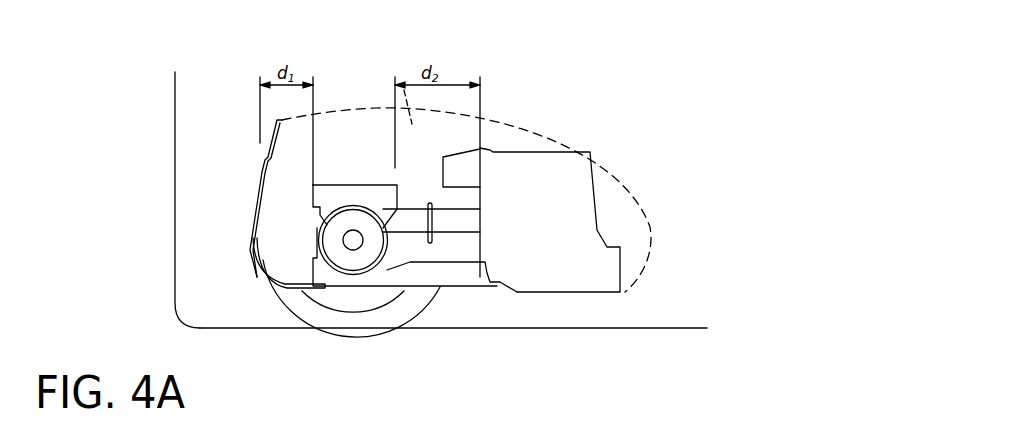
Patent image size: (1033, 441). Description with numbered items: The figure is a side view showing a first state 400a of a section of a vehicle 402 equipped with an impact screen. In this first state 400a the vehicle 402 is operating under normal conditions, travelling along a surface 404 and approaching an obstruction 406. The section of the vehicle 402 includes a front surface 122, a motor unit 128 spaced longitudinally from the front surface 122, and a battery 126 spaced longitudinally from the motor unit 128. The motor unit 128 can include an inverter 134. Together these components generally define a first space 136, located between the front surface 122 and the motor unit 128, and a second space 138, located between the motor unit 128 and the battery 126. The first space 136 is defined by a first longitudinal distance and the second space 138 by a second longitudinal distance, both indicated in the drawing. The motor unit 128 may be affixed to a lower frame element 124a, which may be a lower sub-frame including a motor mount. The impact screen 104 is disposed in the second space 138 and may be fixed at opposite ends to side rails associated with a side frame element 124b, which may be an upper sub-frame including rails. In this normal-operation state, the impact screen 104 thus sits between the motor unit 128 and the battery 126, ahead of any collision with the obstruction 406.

The first state 400a is at (705, 50).
The vehicle 402 is at (632, 153).
The surface 404 is at (657, 328).
The obstruction 406 is at (173, 88).
The inverter 134 is at (315, 205).
The front surface 122 is at (258, 236).
The first space 136 is at (287, 232).
The motor unit 128 is at (337, 228).
The second space 138 is at (402, 245).
The lower frame element 124a is at (412, 287).
The side frame element 124b is at (458, 227).
The impact screen 104 is at (431, 245).
The battery 126 is at (566, 236).